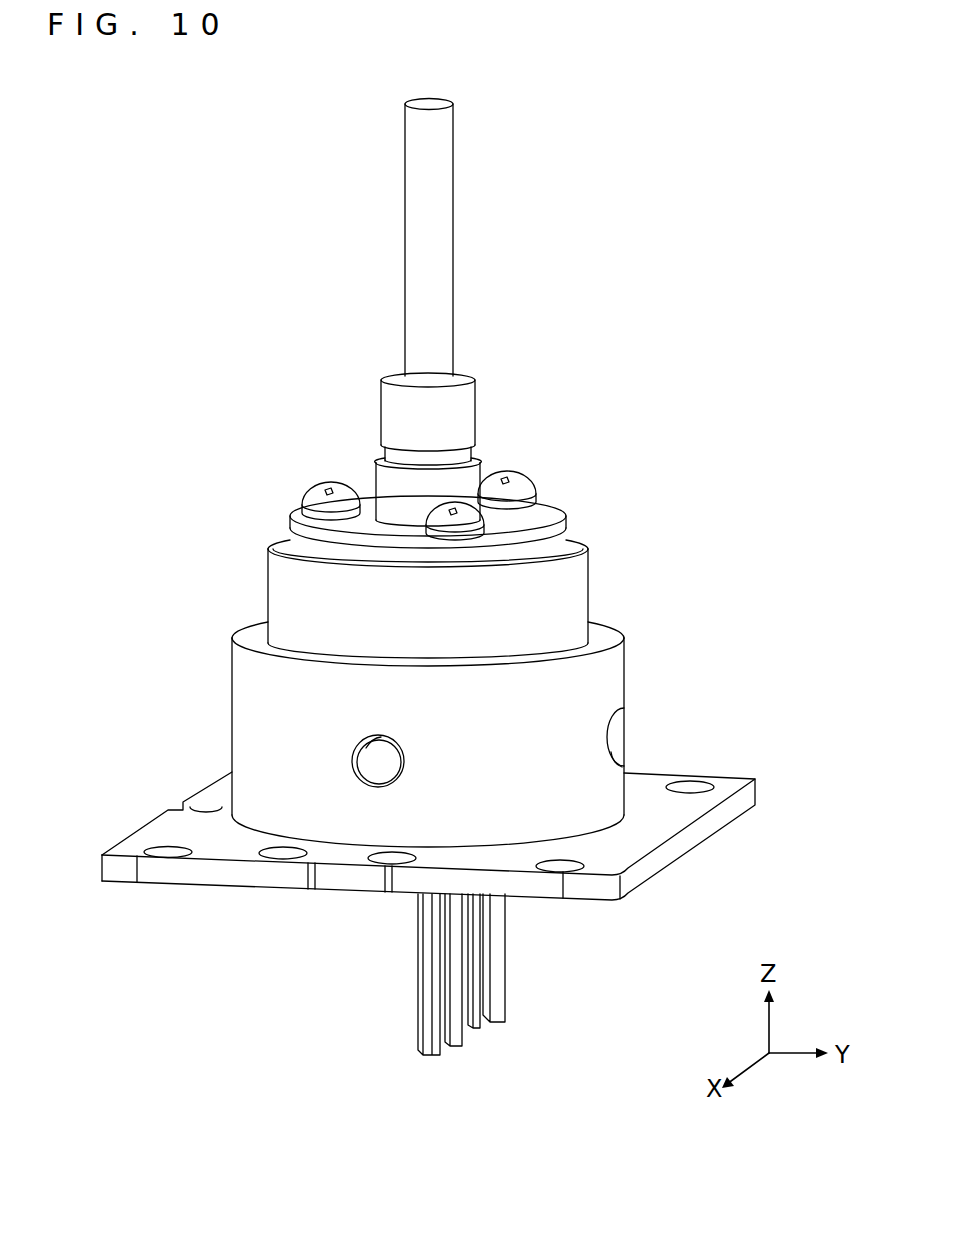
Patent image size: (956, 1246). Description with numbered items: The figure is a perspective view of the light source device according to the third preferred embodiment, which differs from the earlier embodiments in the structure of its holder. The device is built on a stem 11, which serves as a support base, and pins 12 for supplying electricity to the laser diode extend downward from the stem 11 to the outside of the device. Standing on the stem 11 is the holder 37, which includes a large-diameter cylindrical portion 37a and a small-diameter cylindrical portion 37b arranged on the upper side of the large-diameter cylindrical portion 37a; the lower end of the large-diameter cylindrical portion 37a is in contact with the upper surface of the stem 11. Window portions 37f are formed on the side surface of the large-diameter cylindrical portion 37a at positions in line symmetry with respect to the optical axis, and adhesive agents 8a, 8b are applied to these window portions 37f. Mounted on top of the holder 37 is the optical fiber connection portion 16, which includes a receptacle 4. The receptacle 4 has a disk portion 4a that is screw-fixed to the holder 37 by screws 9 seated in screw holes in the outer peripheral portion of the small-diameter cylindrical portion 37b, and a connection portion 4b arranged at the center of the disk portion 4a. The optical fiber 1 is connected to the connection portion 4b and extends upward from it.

The optical fiber 1 is at (441, 140).
The receptacle 4 is at (459, 460).
The disk portion 4a is at (546, 511).
The connection portion 4b is at (460, 413).
The screws 9 is at (320, 487).
The optical fiber connection portion 16 is at (303, 436).
The holder 37 is at (428, 743).
The large-diameter cylindrical portion 37a is at (245, 736).
The small-diameter cylindrical portion 37b is at (282, 595).
The window portions 37f is at (352, 745).
The adhesive agent 8a is at (375, 765).
The adhesive agent 8b is at (621, 737).
The stem 11 is at (650, 831).
The pin 12 is at (492, 975).